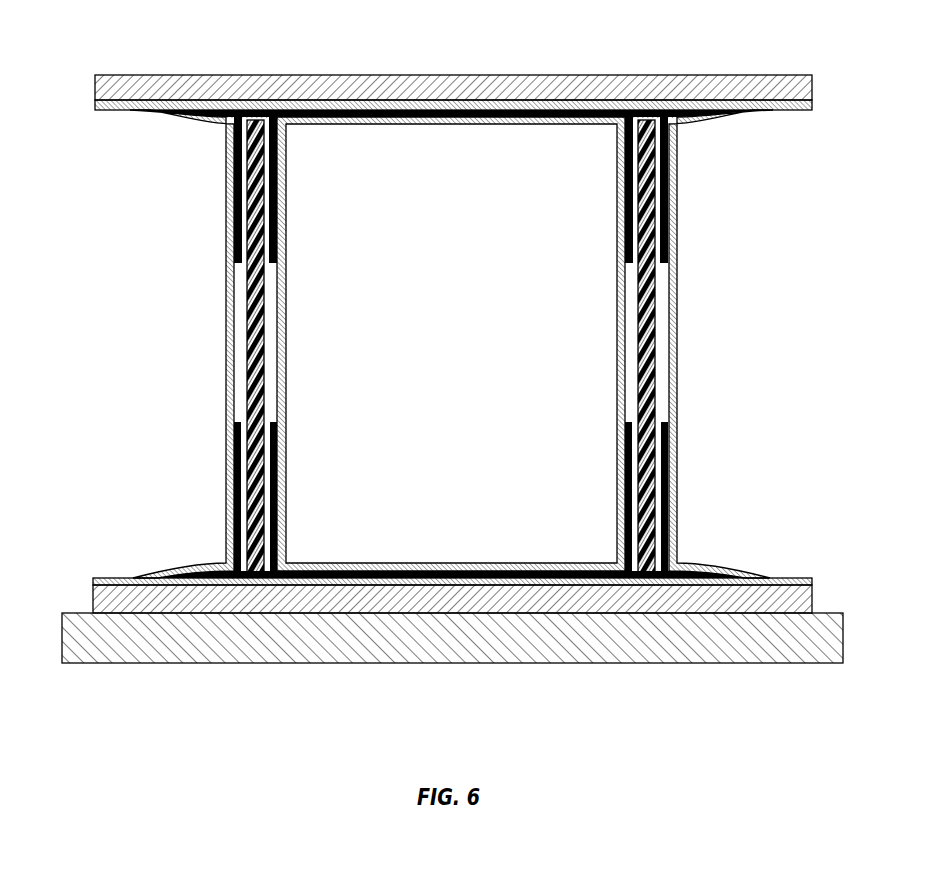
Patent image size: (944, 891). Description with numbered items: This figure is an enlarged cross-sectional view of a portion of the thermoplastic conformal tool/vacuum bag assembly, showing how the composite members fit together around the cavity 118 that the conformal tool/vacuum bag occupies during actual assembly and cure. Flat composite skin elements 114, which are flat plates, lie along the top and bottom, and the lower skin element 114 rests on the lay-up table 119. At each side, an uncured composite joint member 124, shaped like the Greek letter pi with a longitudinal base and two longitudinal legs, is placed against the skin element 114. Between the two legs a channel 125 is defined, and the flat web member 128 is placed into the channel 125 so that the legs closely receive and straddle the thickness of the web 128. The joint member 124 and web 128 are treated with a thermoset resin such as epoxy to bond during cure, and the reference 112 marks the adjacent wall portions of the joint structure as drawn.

The side wall 112 is at (228, 255).
The composite skin element 114 is at (112, 87).
The cavity 118 is at (467, 372).
The lay-up table 119 is at (440, 640).
The composite joint member 124 is at (273, 210).
The channel 125 is at (451, 344).
The web member 128 is at (250, 363).